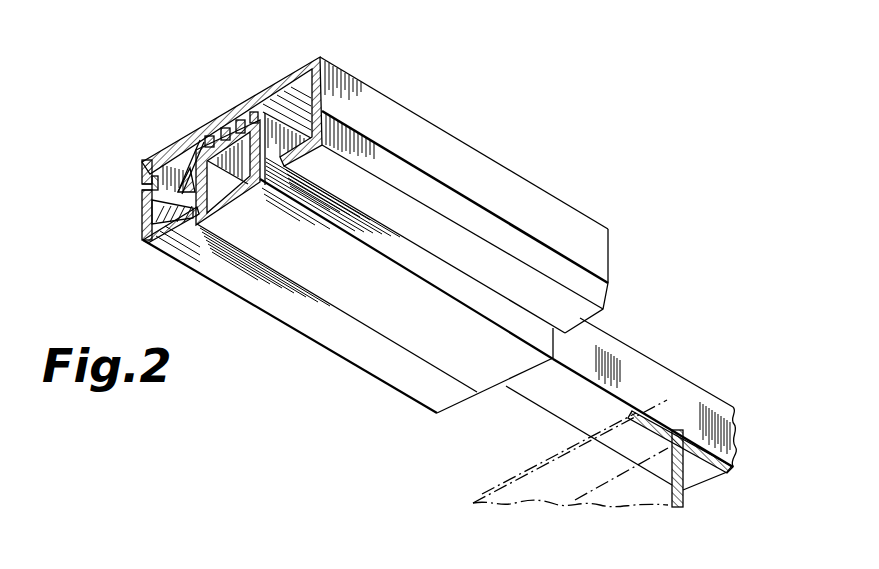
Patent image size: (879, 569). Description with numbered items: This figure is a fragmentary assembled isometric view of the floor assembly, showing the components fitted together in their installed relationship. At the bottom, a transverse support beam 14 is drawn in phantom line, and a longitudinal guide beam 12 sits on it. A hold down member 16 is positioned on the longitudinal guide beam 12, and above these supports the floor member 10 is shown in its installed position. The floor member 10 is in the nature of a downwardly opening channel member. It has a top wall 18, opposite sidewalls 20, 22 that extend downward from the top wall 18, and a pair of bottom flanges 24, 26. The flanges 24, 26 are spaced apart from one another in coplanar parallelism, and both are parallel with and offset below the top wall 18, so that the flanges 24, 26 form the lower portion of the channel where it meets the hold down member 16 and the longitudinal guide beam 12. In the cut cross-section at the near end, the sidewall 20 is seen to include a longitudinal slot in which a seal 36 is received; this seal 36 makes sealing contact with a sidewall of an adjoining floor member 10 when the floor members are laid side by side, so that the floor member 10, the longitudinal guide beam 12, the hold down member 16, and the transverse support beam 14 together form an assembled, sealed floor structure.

The floor member 10 is at (394, 80).
The longitudinal guide beam 12 is at (632, 355).
The transverse support beam 14 is at (592, 453).
The hold down member 16 is at (318, 284).
The top wall 18 is at (254, 92).
The sidewall 20 is at (143, 212).
The sidewall 22 is at (462, 152).
The bottom flange 24 is at (375, 356).
The bottom flange 26 is at (483, 251).
The seal 36 is at (143, 187).